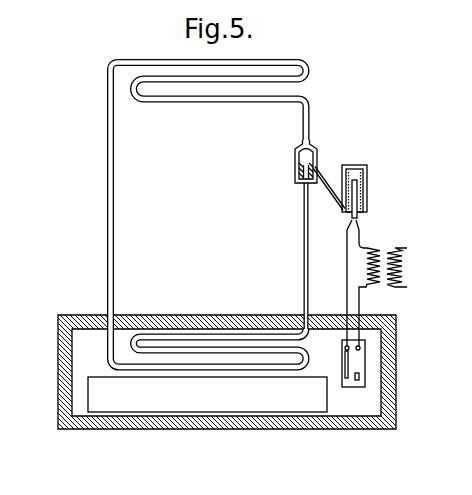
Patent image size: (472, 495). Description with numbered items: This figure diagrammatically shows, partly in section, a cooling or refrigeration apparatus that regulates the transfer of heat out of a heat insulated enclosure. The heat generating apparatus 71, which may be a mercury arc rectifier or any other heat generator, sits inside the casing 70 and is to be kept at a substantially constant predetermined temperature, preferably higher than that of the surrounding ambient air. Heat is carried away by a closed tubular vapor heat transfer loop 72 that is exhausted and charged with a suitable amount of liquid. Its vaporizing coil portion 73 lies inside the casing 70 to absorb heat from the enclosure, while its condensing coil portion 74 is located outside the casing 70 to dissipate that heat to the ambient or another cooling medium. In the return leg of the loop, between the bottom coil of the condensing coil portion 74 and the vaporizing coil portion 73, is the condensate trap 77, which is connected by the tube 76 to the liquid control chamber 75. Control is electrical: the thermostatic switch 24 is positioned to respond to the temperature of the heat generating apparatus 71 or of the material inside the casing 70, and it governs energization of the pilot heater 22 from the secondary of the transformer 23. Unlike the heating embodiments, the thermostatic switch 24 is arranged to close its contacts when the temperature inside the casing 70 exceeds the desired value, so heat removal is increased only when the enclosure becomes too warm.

The casing 70 is at (58, 379).
The heat generating apparatus 71 is at (192, 407).
The closed tubular vapor heat transfer loop 72 is at (106, 233).
The vaporizing coil portion 73 is at (197, 334).
The condensing coil portion 74 is at (218, 100).
The liquid control chamber 75 is at (368, 190).
The tube 76 is at (321, 177).
The condensate trap 77 is at (295, 160).
The pilot heater 22 is at (357, 216).
The transformer 23 is at (383, 253).
The thermostatic switch 24 is at (356, 384).